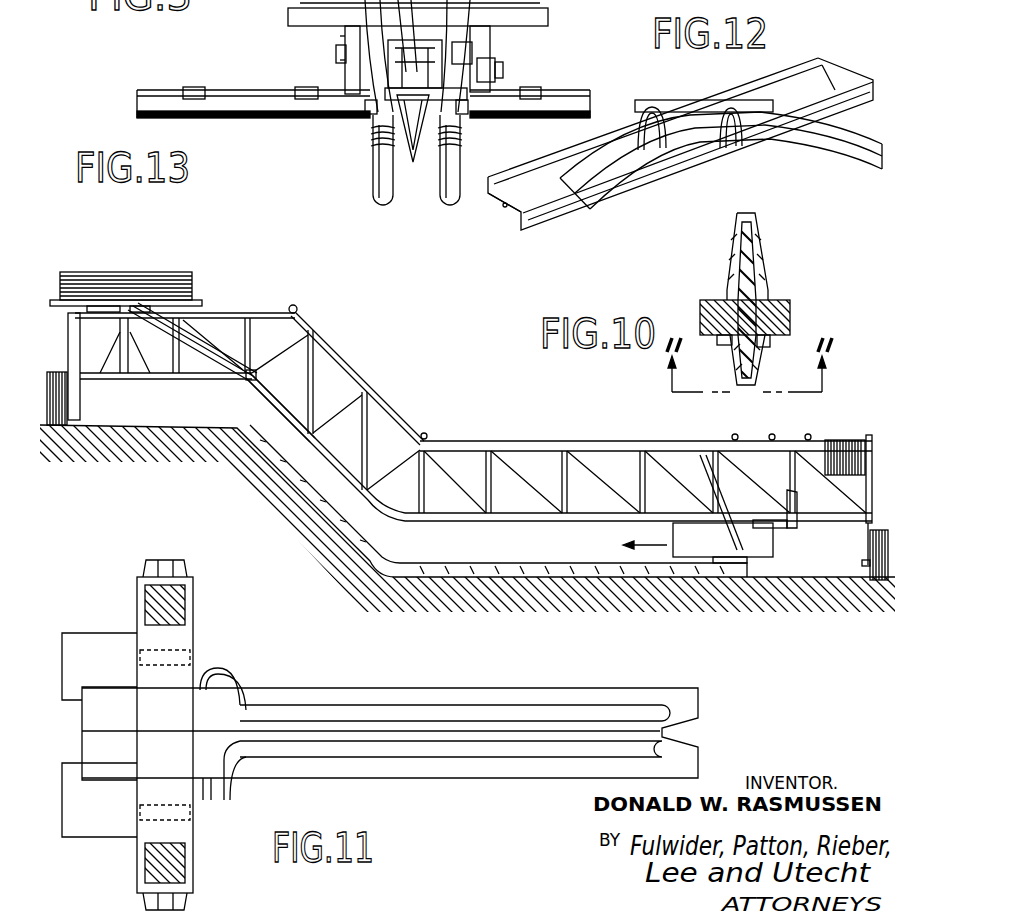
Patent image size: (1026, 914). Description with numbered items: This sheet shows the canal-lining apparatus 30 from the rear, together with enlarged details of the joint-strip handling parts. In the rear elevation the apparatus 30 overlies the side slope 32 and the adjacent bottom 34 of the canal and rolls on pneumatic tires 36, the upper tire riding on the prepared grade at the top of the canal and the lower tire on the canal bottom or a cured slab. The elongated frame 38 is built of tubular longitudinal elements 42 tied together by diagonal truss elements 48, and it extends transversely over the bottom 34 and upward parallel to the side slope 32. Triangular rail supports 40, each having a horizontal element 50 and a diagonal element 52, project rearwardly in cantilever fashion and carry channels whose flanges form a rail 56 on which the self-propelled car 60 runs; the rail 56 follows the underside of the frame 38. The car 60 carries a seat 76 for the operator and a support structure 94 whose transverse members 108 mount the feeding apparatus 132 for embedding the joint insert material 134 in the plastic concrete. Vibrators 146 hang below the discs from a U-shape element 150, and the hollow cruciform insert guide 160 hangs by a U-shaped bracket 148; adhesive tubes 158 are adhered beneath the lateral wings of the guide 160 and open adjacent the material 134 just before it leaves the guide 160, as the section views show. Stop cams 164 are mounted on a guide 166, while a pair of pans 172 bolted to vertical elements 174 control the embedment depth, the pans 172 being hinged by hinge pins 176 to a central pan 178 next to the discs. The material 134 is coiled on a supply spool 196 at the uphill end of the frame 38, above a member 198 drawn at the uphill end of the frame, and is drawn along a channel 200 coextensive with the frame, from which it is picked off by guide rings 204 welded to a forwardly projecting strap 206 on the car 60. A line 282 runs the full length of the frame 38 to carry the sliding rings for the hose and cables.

In FIG. 13, the apparatus 30 is at (291, 280).
In FIG. 13, the side slope 32 is at (337, 528).
In FIG. 13, the bottom 34 is at (568, 563).
In FIG. 13, the pneumatic tires 36 is at (56, 372).
In FIG. 13, the frame 38 is at (348, 345).
In FIG. 13, the rail supports 40 is at (550, 500).
In FIG. 13, the longitudinal elements 42 is at (622, 450).
In FIG. 13, the diagonal truss elements 48 is at (492, 483).
In FIG. 13, the horizontal element 50 is at (567, 510).
In FIG. 13, the diagonal element 52 is at (565, 468).
In FIG. 13, the rail 56 is at (448, 521).
In FIG. 13, the self-propelled car 60 is at (673, 535).
In FIG. 13, the seat 76 is at (781, 531).
In FIG. 3, the support structure 94 is at (272, 0).
In FIG. 3, the transverse members 108 is at (548, 15).
In FIG. 3, the feeding apparatus 132 is at (385, 150).
In FIG. 12, the joint insert material 134 is at (812, 152).
In FIG. 10, the joint insert material 134 is at (722, 305).
In FIG. 13, the joint insert material 134 is at (205, 338).
In FIG. 3, the vibrators 146 is at (378, 182).
In FIG. 3, the U-shaped bracket 148 is at (376, 140).
In FIG. 11, the U-shaped bracket 148 is at (180, 678).
In FIG. 3, the U-shape element 150 is at (385, 33).
In FIG. 11, the U-shape element 150 is at (190, 583).
In FIG. 3, the tubes 158 is at (416, 150).
In FIG. 10, the tubes 158 is at (722, 346).
In FIG. 11, the tubes 158 is at (422, 708).
In FIG. 10, the insert guide 160 is at (762, 270).
In FIG. 11, the insert guide 160 is at (531, 692).
In FIG. 3, the stop cams 164 is at (412, 72).
In FIG. 3, the guide 166 is at (472, 54).
In FIG. 3, the pans 172 is at (235, 100).
In FIG. 3, the vertical elements 174 is at (500, 66).
In FIG. 3, the hinge pins 176 is at (258, 98).
In FIG. 3, the central pan 178 is at (368, 114).
In FIG. 13, the supply spool 196 is at (190, 291).
In FIG. 13, the frame 198 is at (122, 366).
In FIG. 12, the channel 200 is at (597, 194).
In FIG. 12, the guide rings 204 is at (666, 150).
In FIG. 12, the strap 206 is at (670, 100).
In FIG. 13, the line 282 is at (571, 441).